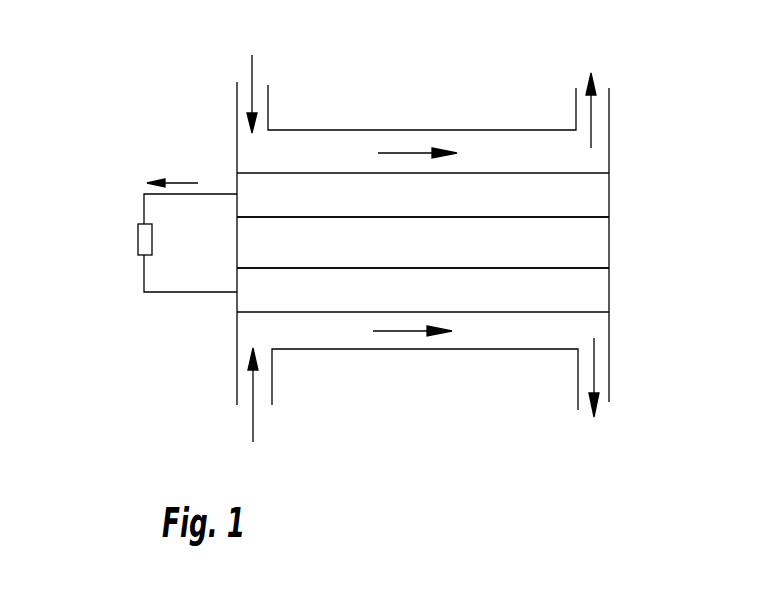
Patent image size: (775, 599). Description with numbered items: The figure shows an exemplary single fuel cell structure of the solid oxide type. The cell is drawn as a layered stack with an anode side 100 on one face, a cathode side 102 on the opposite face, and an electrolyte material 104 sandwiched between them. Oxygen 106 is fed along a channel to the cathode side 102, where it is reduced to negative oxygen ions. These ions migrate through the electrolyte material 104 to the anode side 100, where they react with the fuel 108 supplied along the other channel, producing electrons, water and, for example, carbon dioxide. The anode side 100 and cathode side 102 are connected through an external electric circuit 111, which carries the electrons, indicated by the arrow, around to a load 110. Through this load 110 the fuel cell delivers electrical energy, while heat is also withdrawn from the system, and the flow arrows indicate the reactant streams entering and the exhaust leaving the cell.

The anode side 100 is at (583, 191).
The cathode side 102 is at (580, 288).
The electrolyte material 104 is at (587, 240).
The oxygen 106 is at (253, 437).
The fuel 108 is at (252, 63).
The load 110 is at (137, 240).
The external electric circuit 111 is at (124, 180).